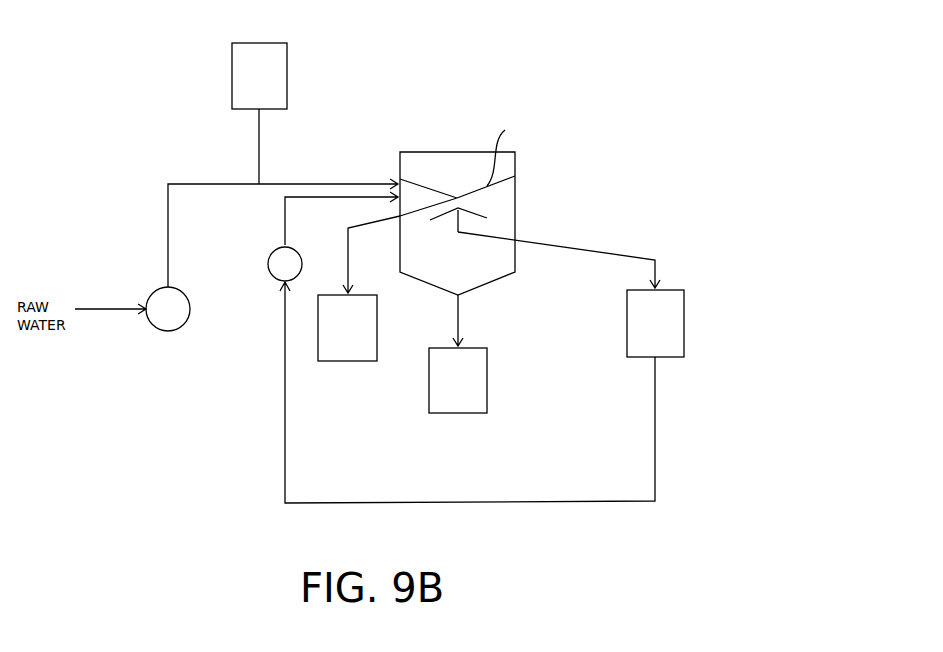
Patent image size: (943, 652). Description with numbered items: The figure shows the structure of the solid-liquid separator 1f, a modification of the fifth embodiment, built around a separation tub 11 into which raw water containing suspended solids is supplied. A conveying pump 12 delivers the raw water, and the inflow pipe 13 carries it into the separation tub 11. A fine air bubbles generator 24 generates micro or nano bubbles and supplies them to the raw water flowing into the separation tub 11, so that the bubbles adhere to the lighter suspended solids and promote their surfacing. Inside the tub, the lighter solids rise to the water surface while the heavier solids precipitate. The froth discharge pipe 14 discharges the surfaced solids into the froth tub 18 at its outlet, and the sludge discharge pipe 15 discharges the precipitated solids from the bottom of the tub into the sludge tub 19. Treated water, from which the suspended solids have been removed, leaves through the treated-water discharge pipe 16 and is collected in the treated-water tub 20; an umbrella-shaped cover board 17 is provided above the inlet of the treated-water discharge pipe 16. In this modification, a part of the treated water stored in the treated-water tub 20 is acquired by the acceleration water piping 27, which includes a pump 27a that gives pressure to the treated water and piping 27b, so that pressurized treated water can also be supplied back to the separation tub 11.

The solid-liquid separator 1f is at (629, 155).
The separation tub 11 is at (513, 168).
The conveying pump 12 is at (168, 331).
The inflow pipe 13 is at (220, 184).
The froth discharge pipe 14 is at (360, 224).
The sludge discharge pipe 15 is at (458, 315).
The treated-water discharge pipe 16 is at (603, 250).
The cover board 17 is at (477, 211).
The froth tub 18 is at (348, 361).
The sludge tub 19 is at (456, 413).
The treated-water tub 20 is at (684, 322).
The fine air bubbles generator 24 is at (288, 76).
The acceleration water piping 27 is at (294, 213).
The pump 27a is at (268, 265).
The piping 27b is at (285, 331).